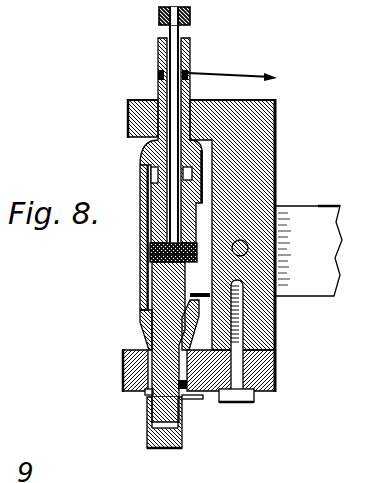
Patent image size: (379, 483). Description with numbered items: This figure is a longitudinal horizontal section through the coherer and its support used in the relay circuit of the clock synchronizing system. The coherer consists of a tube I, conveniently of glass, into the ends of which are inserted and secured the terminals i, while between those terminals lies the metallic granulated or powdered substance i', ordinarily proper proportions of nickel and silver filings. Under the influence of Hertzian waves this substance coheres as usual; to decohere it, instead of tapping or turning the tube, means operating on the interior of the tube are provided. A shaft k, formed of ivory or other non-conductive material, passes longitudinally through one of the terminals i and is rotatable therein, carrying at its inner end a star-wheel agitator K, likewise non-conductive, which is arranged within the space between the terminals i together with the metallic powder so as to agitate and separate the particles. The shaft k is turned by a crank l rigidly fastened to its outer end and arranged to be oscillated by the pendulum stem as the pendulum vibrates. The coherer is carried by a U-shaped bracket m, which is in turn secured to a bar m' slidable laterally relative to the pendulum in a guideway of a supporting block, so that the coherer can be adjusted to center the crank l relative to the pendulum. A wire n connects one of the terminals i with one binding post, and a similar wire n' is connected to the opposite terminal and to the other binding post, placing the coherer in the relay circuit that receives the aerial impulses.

The crank l is at (160, 19).
The shaft k is at (171, 30).
The terminals i is at (189, 241).
The metallic granulated or powdered substance i' is at (189, 241).
The star-wheel agitator K is at (150, 257).
The tube I is at (147, 278).
The wire n is at (232, 68).
The wire n' is at (197, 413).
The U-shaped bracket m is at (189, 241).
The bar m' is at (308, 251).